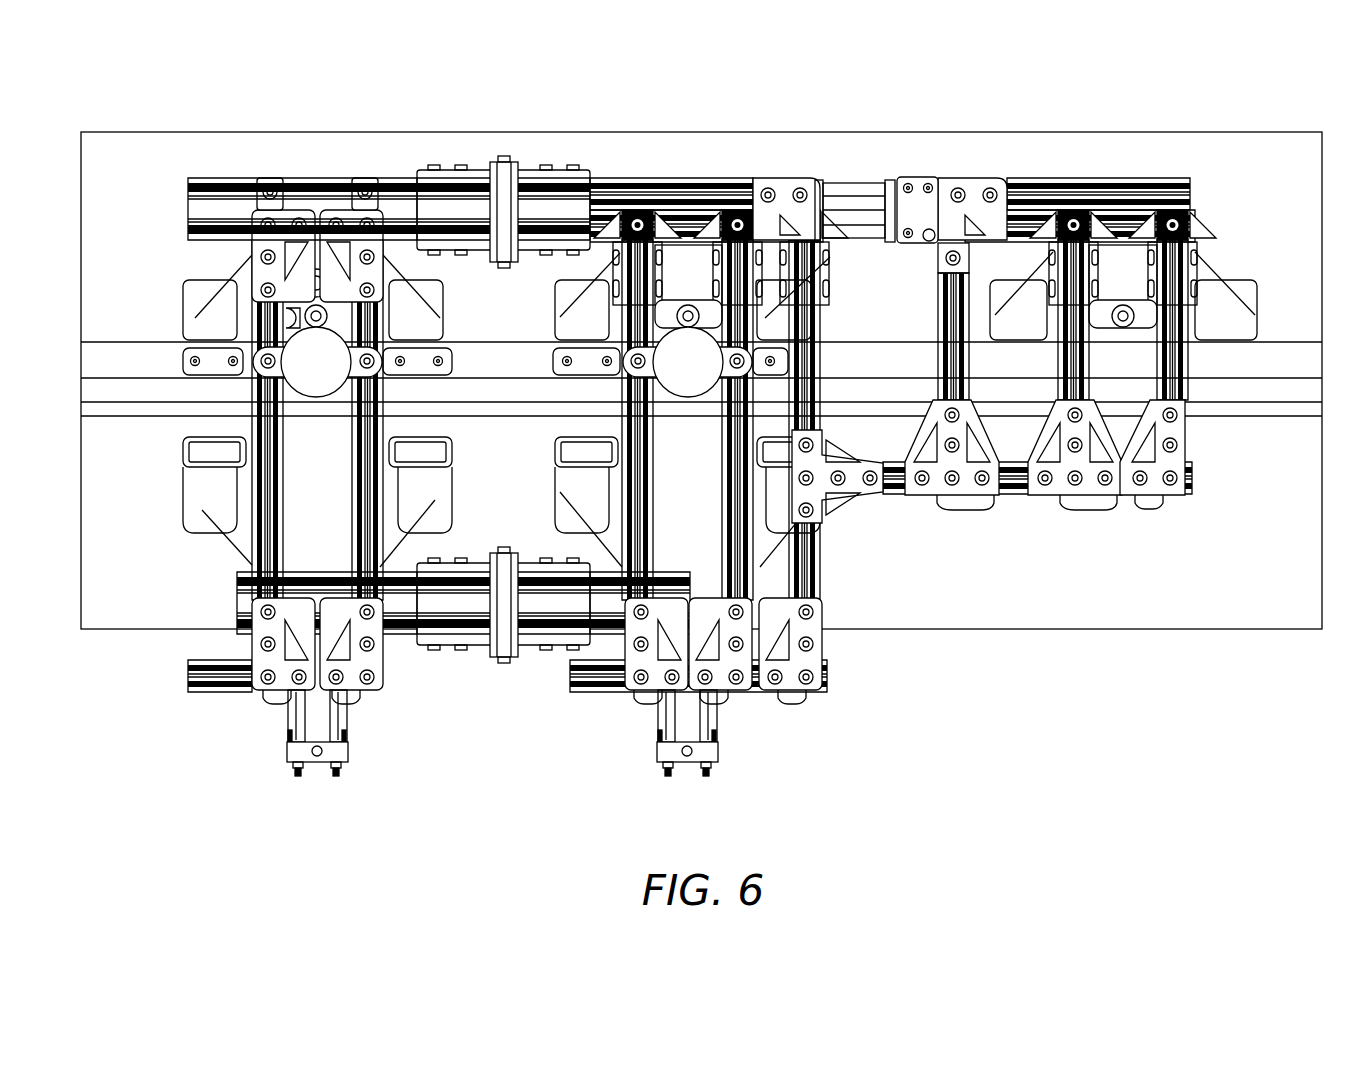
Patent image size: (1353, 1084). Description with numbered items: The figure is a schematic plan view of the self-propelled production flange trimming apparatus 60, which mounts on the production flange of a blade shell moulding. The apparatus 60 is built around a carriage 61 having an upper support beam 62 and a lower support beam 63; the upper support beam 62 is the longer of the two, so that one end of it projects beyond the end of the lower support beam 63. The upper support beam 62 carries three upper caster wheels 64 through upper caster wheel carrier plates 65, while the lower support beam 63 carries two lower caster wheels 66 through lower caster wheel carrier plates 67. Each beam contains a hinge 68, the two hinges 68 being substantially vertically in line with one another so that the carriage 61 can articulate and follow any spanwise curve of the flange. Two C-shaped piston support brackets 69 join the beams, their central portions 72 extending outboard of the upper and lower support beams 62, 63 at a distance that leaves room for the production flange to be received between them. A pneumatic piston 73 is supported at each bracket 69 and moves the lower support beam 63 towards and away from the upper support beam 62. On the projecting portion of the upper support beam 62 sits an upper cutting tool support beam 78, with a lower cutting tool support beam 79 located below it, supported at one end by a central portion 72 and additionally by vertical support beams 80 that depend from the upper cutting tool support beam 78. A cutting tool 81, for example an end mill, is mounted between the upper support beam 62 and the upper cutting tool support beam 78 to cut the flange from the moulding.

The self-propelled production flange trimming apparatus 60 is at (1180, 182).
The carriage 61 is at (690, 182).
The upper support beam 62 is at (400, 205).
The lower support beam 63 is at (437, 607).
The upper caster wheel 64 is at (1150, 332).
The upper caster wheel carrier plate 65 is at (195, 318).
The lower caster wheel 66 is at (297, 468).
The lower caster wheel carrier plate 67 is at (435, 500).
The hinge 68 is at (504, 156).
The C-shaped piston support bracket 69 is at (283, 680).
The central portion 72 is at (257, 547).
The pneumatic piston 73 is at (318, 765).
The upper cutting tool support beam 78 is at (1092, 182).
The lower cutting tool support beam 79 is at (1017, 488).
The vertical support beam 80 is at (938, 358).
The cutting tool 81 is at (855, 185).